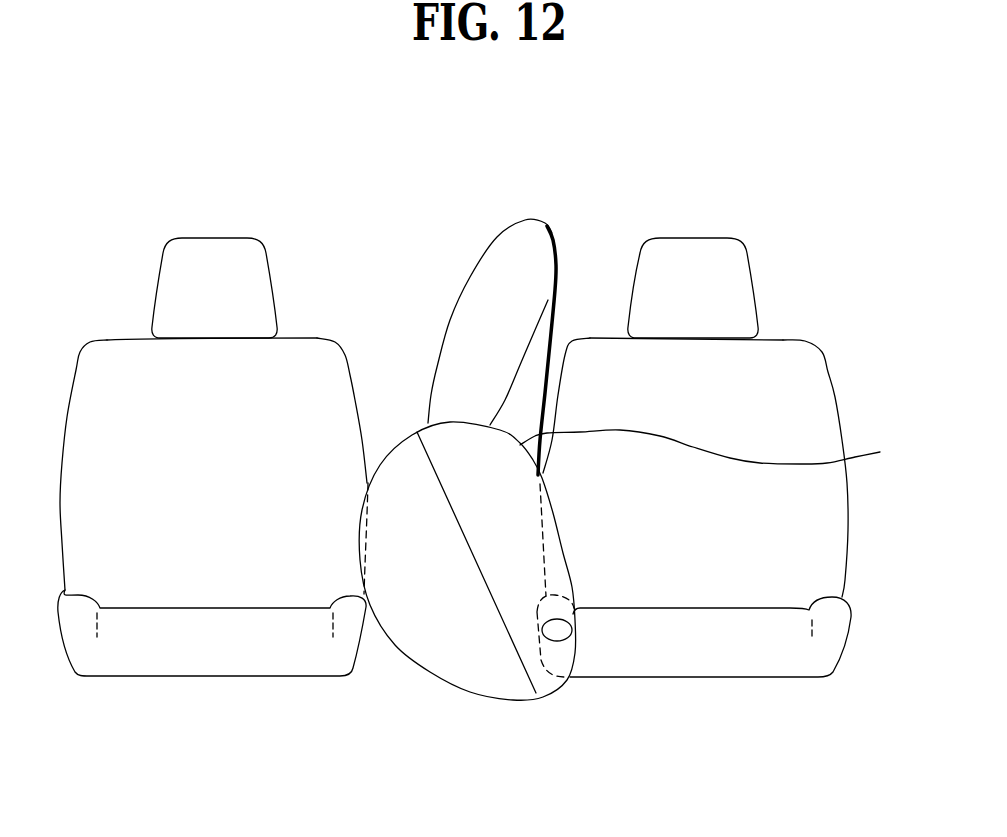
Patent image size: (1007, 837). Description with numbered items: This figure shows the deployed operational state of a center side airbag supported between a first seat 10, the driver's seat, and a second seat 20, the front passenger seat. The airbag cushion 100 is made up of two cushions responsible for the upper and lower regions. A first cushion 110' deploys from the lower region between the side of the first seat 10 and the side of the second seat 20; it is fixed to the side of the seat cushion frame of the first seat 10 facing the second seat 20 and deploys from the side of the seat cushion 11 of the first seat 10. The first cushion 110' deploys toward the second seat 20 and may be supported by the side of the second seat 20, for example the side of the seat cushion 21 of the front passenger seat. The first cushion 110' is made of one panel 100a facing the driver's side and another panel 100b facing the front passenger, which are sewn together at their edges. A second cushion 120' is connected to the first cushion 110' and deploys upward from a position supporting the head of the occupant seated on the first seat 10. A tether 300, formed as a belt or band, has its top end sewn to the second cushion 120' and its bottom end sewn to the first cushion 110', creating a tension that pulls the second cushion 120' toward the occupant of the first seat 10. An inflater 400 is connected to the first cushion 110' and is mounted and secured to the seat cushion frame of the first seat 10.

The first seat 10 is at (702, 496).
The seat cushion of the first seat 11 is at (715, 653).
The second seat 20 is at (199, 496).
The seat cushion of the second seat 21 is at (210, 652).
The airbag cushion 100 is at (633, 491).
The panel facing the driver's side 100a is at (733, 449).
The panel facing the front passenger 100b is at (403, 660).
The first cushion 110' is at (476, 615).
The second cushion 120' is at (474, 304).
The tether 300 is at (552, 342).
The inflater 400 is at (562, 637).